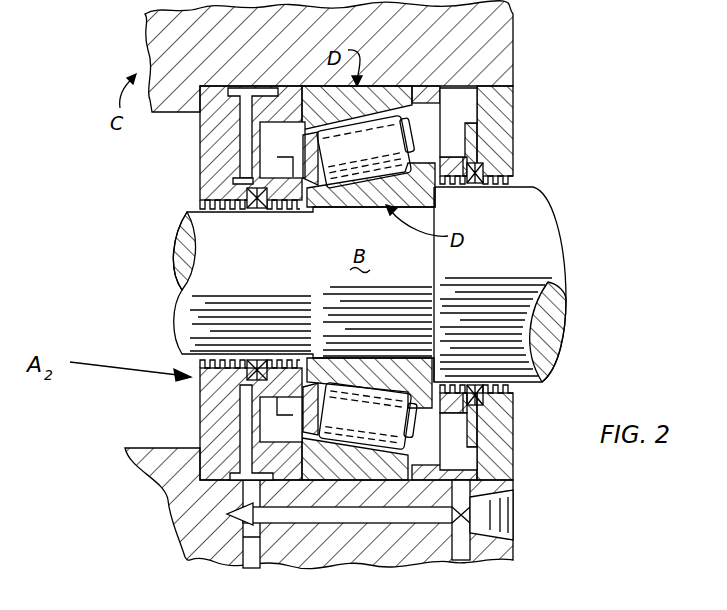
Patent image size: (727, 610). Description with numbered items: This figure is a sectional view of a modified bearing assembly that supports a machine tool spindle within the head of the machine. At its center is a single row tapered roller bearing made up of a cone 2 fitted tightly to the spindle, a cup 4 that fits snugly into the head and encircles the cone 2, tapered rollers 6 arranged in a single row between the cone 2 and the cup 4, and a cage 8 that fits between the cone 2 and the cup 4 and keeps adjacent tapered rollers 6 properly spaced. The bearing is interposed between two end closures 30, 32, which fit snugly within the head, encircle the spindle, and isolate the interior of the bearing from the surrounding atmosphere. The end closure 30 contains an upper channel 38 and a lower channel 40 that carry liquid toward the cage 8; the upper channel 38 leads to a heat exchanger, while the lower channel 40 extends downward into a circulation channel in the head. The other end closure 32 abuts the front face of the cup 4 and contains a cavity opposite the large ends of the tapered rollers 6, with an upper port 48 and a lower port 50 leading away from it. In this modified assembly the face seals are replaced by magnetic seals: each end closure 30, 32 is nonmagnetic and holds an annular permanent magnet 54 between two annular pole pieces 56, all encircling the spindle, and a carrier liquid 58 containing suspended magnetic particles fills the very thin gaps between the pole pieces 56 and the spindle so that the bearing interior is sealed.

The cone 2 is at (373, 372).
The cup 4 is at (350, 472).
The tapered rollers 6 is at (388, 426).
The cage 8 is at (413, 128).
The end closure 30 is at (200, 143).
The end closure 32 is at (497, 123).
The upper channel 38 is at (243, 160).
The lower channel 40 is at (238, 404).
The upper port 48 is at (473, 97).
The lower port 50 is at (460, 466).
The annular permanent magnet 54 is at (257, 200).
The annular pole pieces 56 is at (262, 325).
The carrier liquid 58 is at (246, 209).